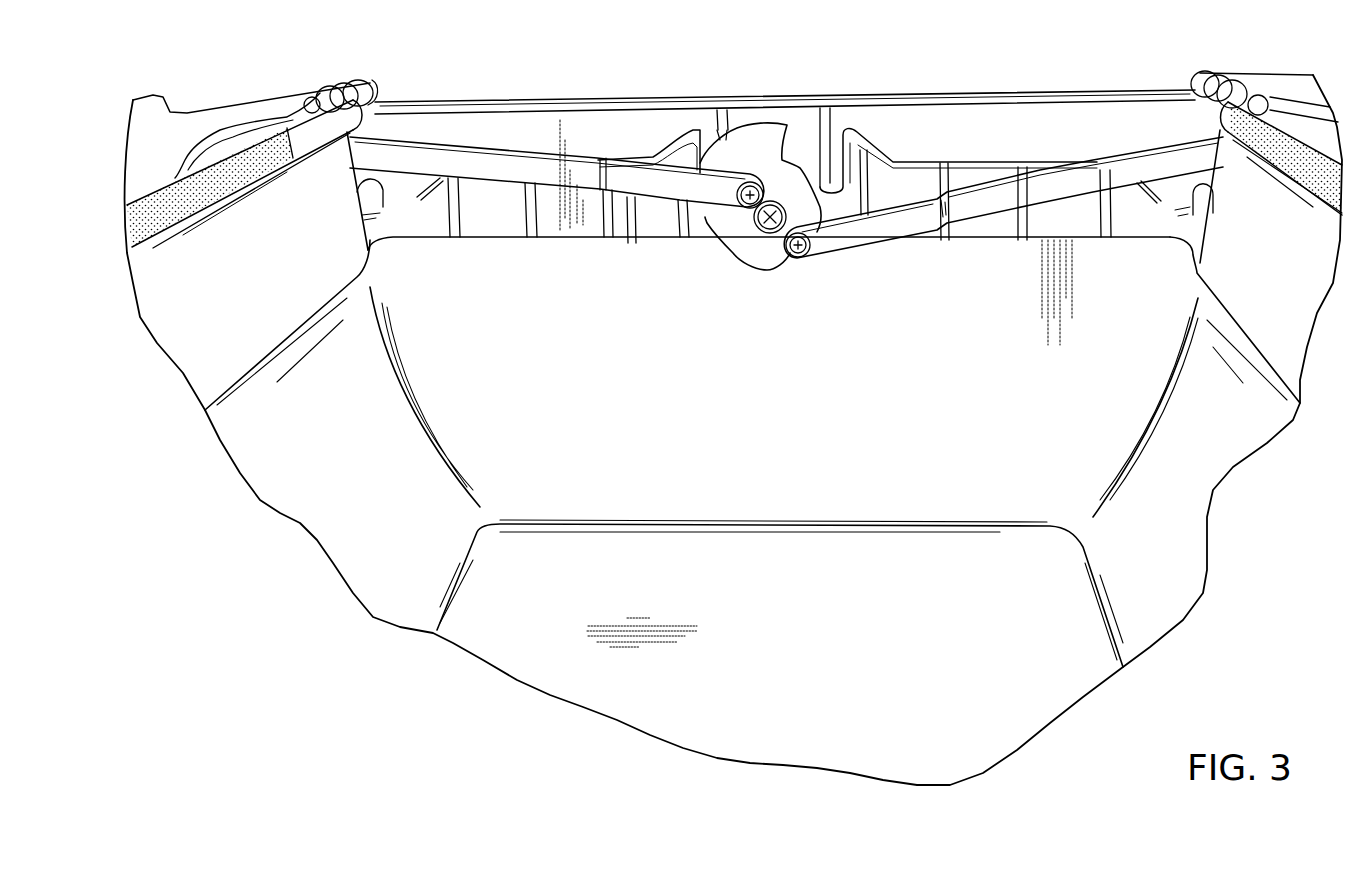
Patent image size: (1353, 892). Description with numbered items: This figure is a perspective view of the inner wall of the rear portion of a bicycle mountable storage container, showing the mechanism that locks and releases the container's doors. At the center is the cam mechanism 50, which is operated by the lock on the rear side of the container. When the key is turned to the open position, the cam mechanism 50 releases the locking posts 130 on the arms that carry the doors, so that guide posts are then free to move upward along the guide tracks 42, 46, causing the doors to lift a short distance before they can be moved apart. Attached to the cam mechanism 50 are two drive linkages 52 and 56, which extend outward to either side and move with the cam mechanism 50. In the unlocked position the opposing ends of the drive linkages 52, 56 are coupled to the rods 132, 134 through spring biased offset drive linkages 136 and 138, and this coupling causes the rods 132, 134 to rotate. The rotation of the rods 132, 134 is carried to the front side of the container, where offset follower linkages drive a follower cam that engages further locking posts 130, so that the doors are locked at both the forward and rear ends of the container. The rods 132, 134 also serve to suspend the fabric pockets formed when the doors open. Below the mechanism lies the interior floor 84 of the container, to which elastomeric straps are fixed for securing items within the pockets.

The locking posts 130 is at (143, 98).
The spring biased offset drive linkage 138 is at (322, 98).
The rod 134 is at (312, 135).
The guide track 46 is at (626, 157).
The drive linkage 56 is at (513, 172).
The cam mechanism 50 is at (743, 258).
The guide track 42 is at (968, 160).
The drive linkage 52 is at (1056, 183).
The rod 132 is at (1217, 118).
The spring biased offset drive linkage 136 is at (1238, 84).
The interior floor 84 is at (803, 676).